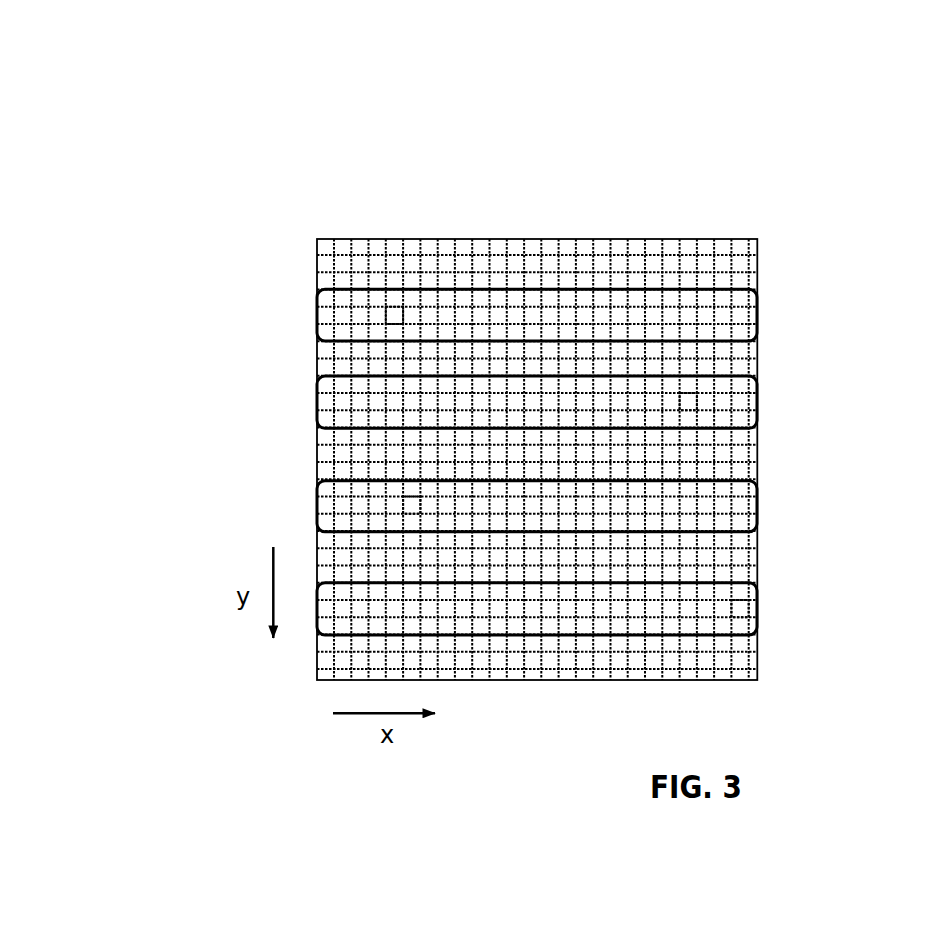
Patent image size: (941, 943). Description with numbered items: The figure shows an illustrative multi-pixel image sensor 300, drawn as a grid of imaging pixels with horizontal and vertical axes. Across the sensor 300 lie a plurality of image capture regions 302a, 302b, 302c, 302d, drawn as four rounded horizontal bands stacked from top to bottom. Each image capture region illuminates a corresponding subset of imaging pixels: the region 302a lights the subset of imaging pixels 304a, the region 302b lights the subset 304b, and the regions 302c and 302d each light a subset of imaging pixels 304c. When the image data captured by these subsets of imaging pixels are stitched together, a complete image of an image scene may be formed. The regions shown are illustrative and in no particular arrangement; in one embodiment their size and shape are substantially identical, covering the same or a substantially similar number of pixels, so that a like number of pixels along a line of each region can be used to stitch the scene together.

The multi-pixel image sensor 300 is at (663, 208).
The image capture region 302a is at (316, 314).
The image capture region 302b is at (317, 503).
The image capture region 302c is at (667, 377).
The image capture region 302d is at (740, 578).
The subset of imaging pixels 304a is at (387, 321).
The subset of imaging pixels 304b is at (420, 505).
The subset of imaging pixels 304c is at (685, 413).